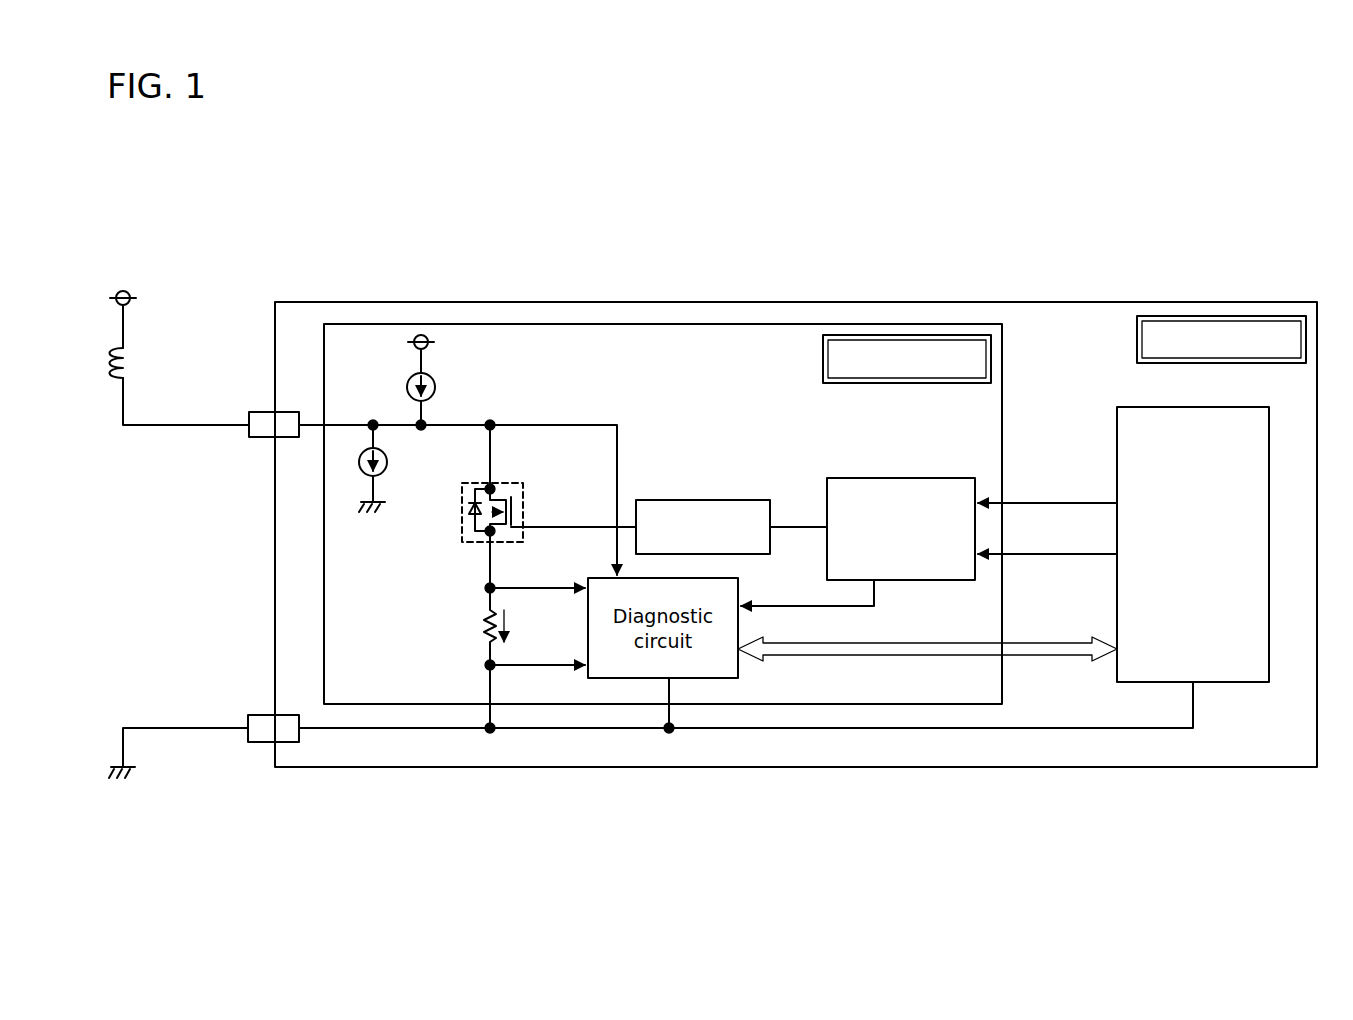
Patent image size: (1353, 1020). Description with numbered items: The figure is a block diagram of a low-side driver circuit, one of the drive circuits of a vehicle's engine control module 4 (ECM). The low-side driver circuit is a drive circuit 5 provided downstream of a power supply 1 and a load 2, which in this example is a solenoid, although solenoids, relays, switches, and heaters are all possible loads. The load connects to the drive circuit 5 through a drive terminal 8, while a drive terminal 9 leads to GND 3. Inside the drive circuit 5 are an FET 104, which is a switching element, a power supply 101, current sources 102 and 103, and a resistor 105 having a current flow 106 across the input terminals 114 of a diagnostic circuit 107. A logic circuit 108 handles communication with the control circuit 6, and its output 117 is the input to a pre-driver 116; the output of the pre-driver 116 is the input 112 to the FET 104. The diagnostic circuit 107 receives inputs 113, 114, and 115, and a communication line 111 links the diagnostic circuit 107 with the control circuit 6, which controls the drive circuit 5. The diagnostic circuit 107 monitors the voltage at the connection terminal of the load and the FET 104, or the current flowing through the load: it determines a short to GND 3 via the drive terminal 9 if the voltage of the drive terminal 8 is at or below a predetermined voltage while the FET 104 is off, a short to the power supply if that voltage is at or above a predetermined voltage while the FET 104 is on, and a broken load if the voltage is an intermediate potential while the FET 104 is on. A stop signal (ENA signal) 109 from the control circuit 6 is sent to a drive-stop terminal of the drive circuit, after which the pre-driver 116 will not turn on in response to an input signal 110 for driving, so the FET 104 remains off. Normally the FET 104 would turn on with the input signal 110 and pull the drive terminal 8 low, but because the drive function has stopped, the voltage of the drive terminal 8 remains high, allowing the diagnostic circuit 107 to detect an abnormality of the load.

The power supply 1 is at (120, 287).
The load 2 is at (120, 350).
The GND 3 is at (118, 765).
The engine control module 4 is at (1230, 316).
The drive circuit 5 is at (923, 337).
The control circuit 6 is at (1270, 527).
The drive terminal 8 is at (256, 412).
The drive terminal 9 is at (256, 715).
The power supply 101 is at (414, 341).
The current source 102 is at (436, 380).
The current source 103 is at (362, 482).
The FET 104 is at (462, 530).
The resistor 105 is at (482, 628).
The current flow 106 is at (509, 617).
The diagnostic circuit 107 is at (717, 680).
The logic circuit 108 is at (888, 478).
The stop signal (ENA signal) 109 is at (1052, 470).
The input signal 110 is at (1052, 562).
The communication line 111 is at (942, 685).
The input 112 is at (540, 522).
The input 113 is at (597, 420).
The input terminals 114 is at (540, 590).
The input 115 is at (875, 592).
The pre-driver 116 is at (680, 500).
The output 117 is at (784, 526).